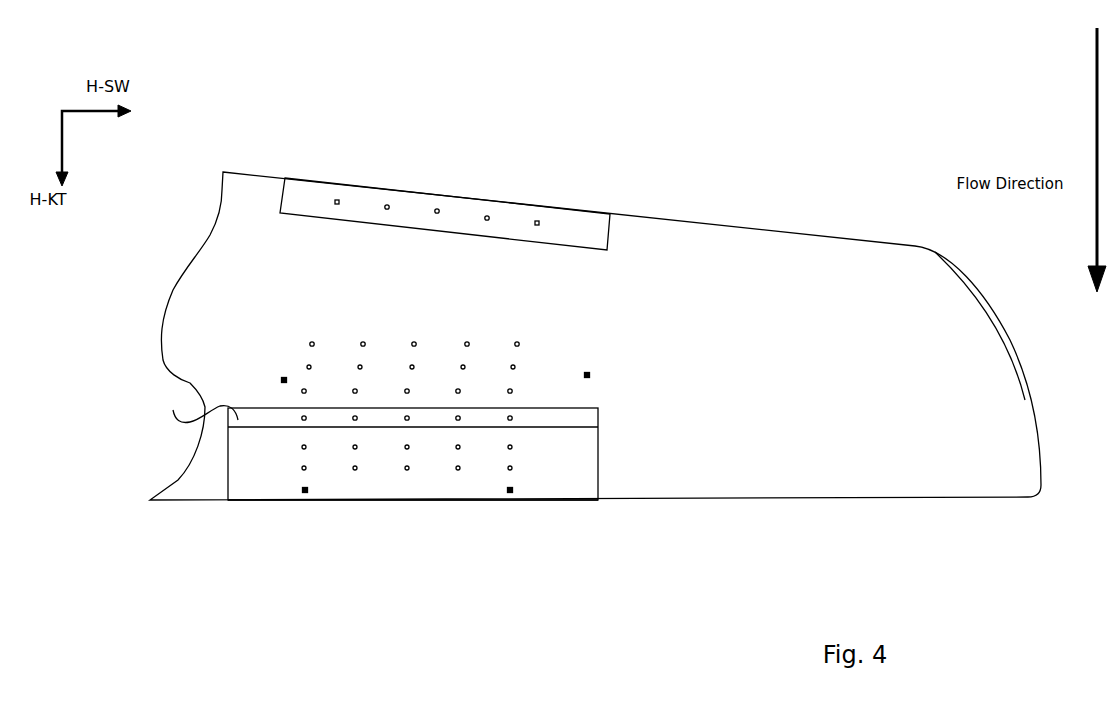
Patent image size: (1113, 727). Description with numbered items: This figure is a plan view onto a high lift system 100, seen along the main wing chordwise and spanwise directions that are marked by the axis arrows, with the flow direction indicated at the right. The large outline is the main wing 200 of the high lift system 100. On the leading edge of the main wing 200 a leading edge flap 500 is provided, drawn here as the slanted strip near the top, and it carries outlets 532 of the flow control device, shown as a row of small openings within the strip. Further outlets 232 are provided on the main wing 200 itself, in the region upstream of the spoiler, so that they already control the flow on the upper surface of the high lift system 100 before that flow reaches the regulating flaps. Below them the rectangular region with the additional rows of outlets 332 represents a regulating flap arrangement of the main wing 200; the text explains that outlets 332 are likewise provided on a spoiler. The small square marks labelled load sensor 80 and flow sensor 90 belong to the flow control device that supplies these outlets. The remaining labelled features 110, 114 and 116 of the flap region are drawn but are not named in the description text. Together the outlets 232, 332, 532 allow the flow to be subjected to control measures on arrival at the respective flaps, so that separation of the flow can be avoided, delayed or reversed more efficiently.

The load sensor 80 is at (281, 379).
The flow sensor 90 is at (305, 493).
The high lift system 100 is at (817, 199).
The plate 110 is at (567, 415).
The edge portion 114 is at (195, 405).
The bottom edge 116 is at (340, 497).
The main wing 200 is at (918, 385).
The outlets 232 is at (414, 342).
The outlets 332 is at (304, 420).
The leading edge flap 500 is at (417, 200).
The outlets 532 is at (487, 218).